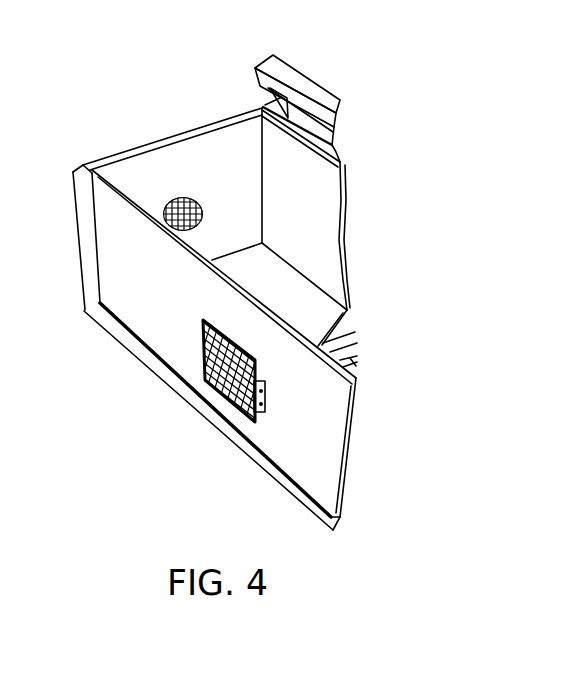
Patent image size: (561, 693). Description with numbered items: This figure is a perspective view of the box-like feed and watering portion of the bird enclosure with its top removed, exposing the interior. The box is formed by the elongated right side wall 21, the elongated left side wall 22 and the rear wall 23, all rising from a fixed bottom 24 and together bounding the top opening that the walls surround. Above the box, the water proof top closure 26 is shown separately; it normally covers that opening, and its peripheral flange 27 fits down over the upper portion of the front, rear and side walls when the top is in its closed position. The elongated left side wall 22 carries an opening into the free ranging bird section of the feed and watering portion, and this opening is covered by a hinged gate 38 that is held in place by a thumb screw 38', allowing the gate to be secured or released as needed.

The elongated right side wall 21 is at (312, 222).
The elongated left side wall 22 is at (150, 318).
The rear wall 23 is at (130, 167).
The fixed bottom 24 is at (318, 323).
The water proof top closure 26 is at (300, 80).
The peripheral flange 27 is at (268, 112).
The hinged gate 38 is at (226, 396).
The thumb screw 38' is at (188, 406).